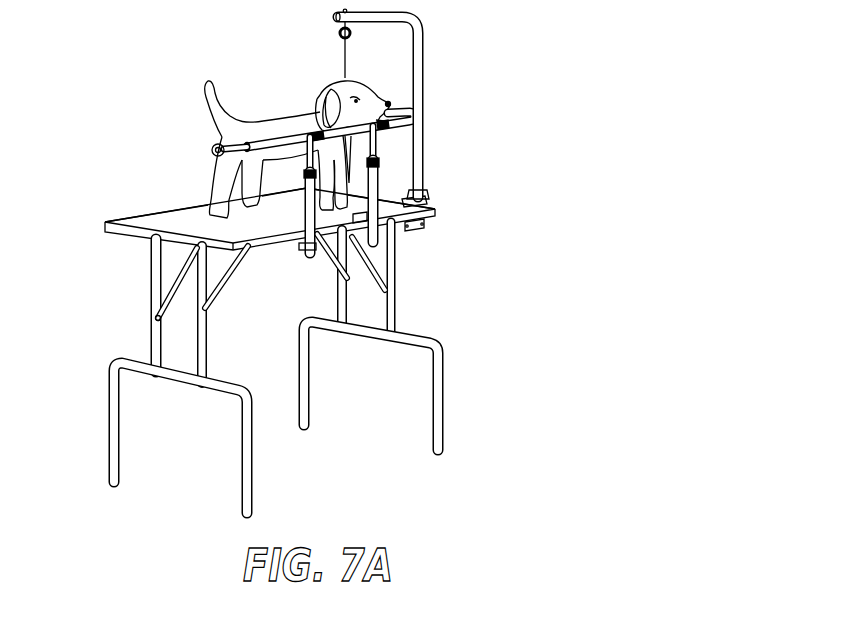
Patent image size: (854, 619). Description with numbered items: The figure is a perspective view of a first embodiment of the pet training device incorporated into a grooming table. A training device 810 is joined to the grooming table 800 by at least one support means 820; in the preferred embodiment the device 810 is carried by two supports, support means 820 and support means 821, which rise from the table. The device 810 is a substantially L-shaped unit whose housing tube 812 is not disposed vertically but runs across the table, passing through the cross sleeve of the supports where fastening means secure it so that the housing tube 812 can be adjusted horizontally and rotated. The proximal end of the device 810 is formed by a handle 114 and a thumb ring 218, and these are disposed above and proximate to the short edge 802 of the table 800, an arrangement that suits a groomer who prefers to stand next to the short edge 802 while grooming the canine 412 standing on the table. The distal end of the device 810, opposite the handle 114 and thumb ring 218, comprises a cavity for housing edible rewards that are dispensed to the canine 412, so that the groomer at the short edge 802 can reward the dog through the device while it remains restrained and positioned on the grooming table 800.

The grooming table 800 is at (132, 222).
The short edge 802 is at (117, 233).
The canine 412 is at (290, 110).
The housing tube 812 is at (294, 136).
The handle 114 is at (217, 144).
The thumb ring 218 is at (213, 156).
The support means 820 is at (386, 176).
The training device 810 is at (418, 124).
The support means 821 is at (298, 202).